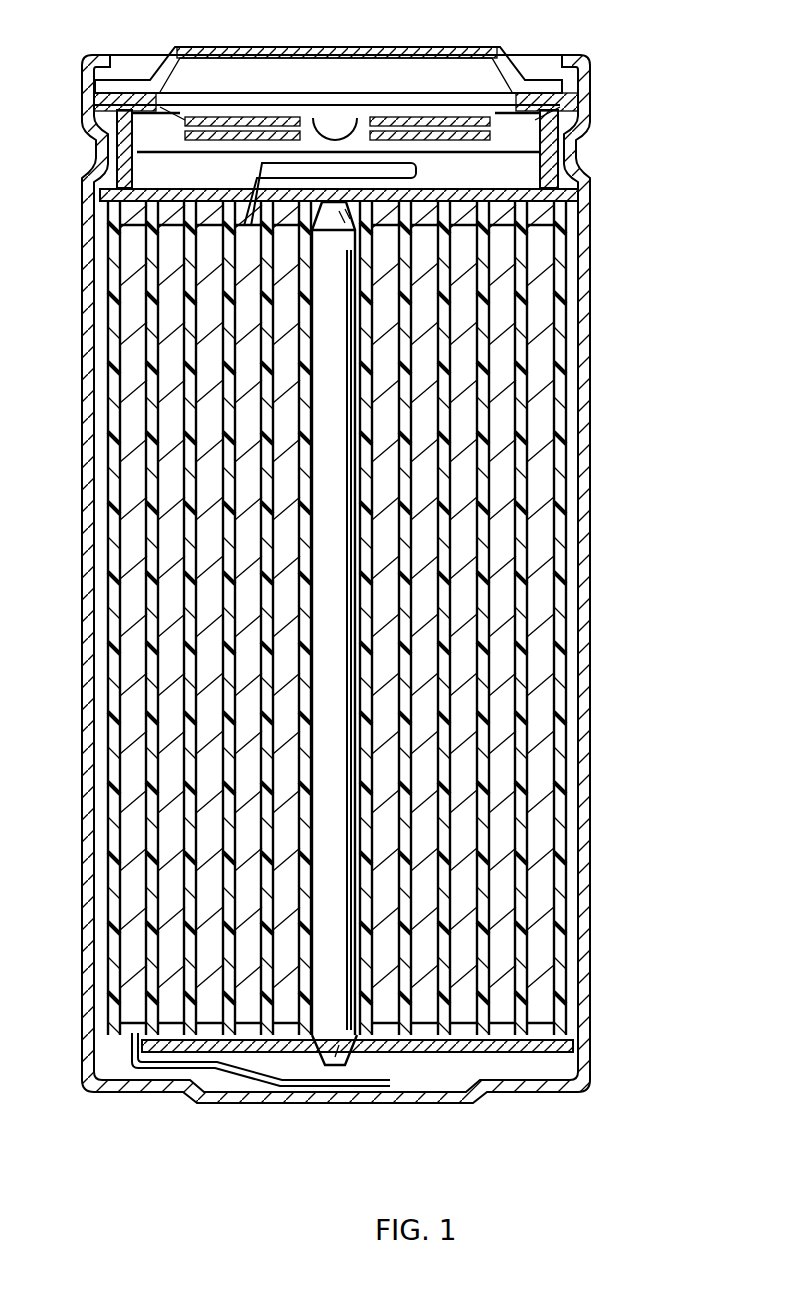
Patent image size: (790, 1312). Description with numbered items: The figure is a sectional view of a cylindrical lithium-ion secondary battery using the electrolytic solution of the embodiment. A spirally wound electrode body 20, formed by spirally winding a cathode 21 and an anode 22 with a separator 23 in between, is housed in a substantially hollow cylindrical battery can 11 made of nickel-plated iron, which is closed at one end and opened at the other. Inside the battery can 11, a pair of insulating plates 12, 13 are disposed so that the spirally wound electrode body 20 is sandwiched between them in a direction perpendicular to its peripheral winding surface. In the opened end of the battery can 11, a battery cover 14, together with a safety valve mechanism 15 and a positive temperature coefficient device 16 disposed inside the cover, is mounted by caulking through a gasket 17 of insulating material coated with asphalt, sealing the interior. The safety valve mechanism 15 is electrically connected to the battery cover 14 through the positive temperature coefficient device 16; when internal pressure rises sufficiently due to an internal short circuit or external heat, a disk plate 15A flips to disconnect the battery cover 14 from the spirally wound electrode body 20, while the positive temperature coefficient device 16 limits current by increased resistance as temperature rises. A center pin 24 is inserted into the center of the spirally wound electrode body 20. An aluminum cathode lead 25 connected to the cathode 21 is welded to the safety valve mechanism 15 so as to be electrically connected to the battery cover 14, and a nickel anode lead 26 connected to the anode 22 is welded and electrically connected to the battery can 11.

The battery can 11 is at (594, 258).
The insulating plate 12 is at (592, 196).
The insulating plate 13 is at (578, 1047).
The battery cover 14 is at (300, 47).
The safety valve mechanism 15 is at (341, 72).
The disk plate 15A is at (456, 110).
The positive temperature coefficient device 16 is at (594, 100).
The gasket 17 is at (586, 162).
The spirally wound electrode body 20 is at (381, 632).
The cathode 21 is at (506, 456).
The anode 22 is at (538, 520).
The separator 23 is at (522, 592).
The center pin 24 is at (335, 634).
The cathode lead 25 is at (322, 152).
The anode lead 26 is at (241, 1088).